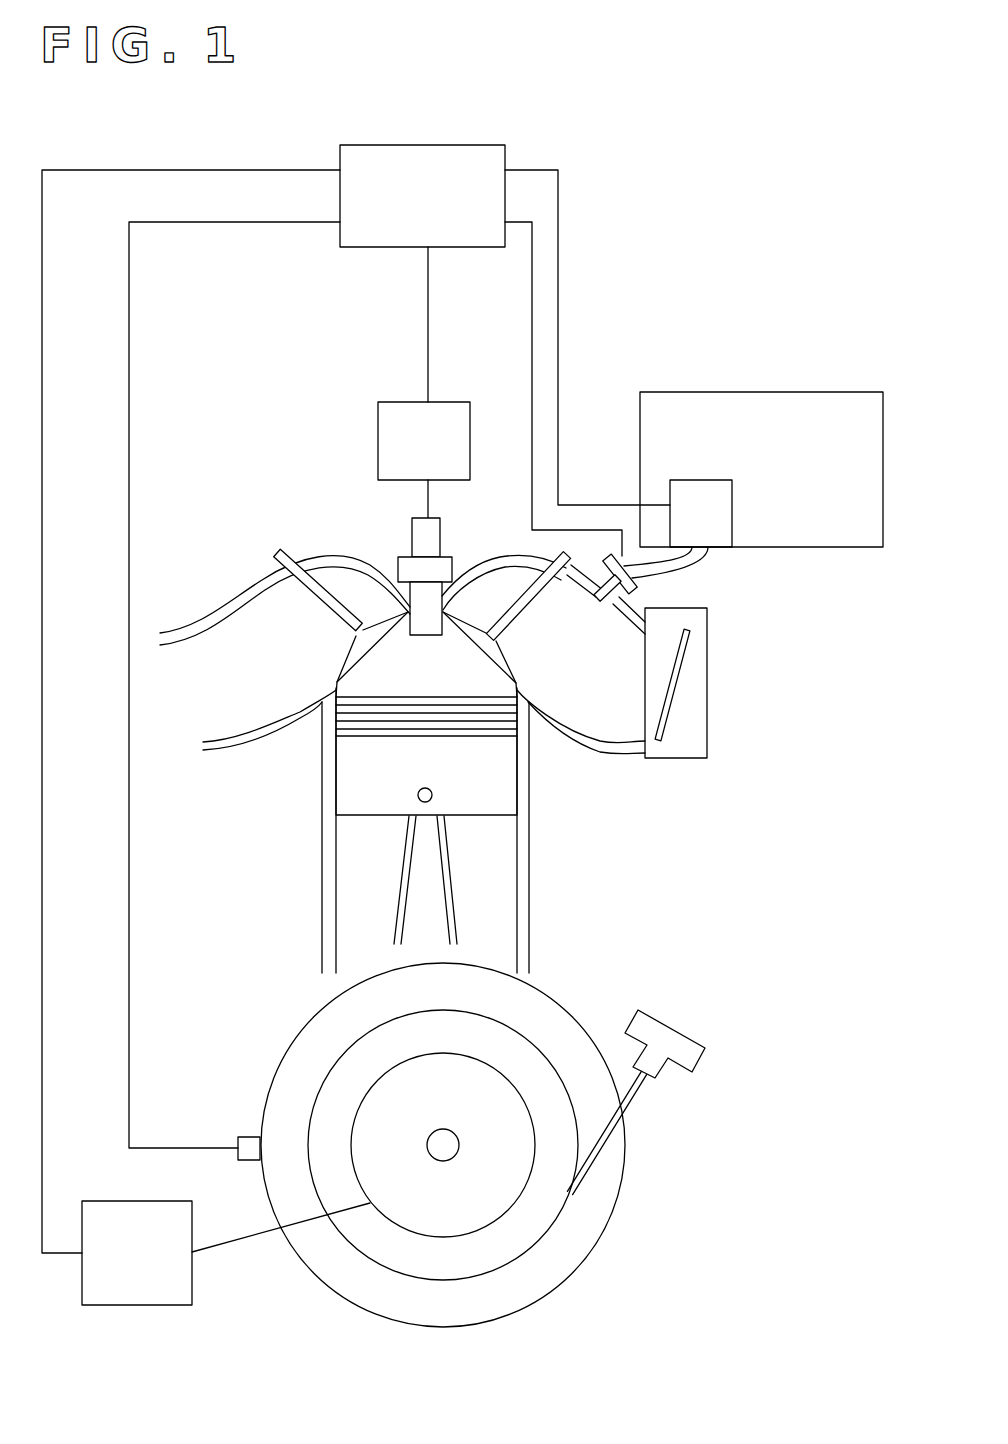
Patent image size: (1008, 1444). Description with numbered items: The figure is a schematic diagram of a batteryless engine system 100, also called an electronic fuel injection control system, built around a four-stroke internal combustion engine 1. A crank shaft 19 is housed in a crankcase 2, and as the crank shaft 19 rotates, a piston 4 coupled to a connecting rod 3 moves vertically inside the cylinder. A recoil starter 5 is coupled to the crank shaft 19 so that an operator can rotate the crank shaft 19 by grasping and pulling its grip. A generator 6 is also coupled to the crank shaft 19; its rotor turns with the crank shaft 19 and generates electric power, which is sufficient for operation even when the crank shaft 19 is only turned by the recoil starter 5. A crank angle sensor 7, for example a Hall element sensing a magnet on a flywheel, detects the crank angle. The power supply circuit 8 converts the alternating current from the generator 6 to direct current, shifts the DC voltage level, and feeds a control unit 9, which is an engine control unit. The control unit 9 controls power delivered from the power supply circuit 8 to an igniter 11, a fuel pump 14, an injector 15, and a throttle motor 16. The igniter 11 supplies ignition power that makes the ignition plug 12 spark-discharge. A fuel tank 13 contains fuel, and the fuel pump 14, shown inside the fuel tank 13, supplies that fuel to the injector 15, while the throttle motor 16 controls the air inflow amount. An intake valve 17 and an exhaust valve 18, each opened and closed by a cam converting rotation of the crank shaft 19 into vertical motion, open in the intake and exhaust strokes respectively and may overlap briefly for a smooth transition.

The engine system 100 is at (768, 88).
The internal combustion engine 1 is at (580, 862).
The crankcase 2 is at (320, 1005).
The connecting rod 3 is at (418, 895).
The piston 4 is at (352, 777).
The recoil starter 5 is at (668, 1022).
The generator 6 is at (483, 1203).
The crank angle sensor 7 is at (243, 1137).
The power supply circuit 8 is at (120, 1200).
The control unit 9 is at (470, 145).
The igniter 11 is at (450, 402).
The ignition plug 12 is at (408, 560).
The fuel tank 13 is at (828, 392).
The fuel pump 14 is at (702, 480).
The injector 15 is at (640, 592).
The throttle motor 16 is at (708, 664).
The intake valve 17 is at (560, 552).
The exhaust valve 18 is at (283, 550).
The crank shaft 19 is at (452, 1130).